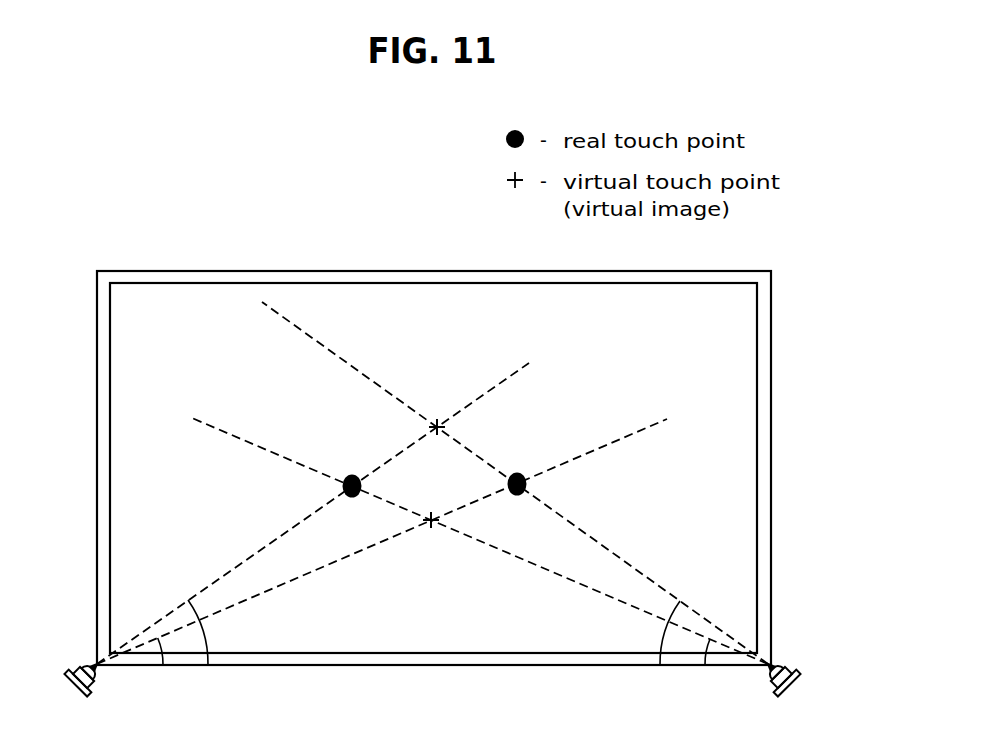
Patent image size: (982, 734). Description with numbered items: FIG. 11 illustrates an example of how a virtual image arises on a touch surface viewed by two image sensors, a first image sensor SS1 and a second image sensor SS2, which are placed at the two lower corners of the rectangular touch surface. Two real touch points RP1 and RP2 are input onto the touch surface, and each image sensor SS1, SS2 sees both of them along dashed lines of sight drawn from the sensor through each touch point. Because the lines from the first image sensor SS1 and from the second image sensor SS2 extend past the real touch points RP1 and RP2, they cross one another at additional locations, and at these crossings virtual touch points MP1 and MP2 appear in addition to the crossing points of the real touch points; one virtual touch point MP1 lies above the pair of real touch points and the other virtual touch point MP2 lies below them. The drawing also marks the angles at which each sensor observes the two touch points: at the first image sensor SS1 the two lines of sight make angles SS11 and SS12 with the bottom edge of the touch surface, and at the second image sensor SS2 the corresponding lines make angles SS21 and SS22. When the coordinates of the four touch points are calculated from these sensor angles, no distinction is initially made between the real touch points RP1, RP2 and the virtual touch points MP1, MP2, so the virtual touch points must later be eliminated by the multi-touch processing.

The first image sensor SS1 is at (72, 680).
The second image sensor SS2 is at (796, 680).
The first real touch point RP1 is at (351, 475).
The second real touch point RP2 is at (518, 474).
The first virtual touch point MP1 is at (437, 415).
The second virtual touch point MP2 is at (431, 508).
The first angle of first sensor SS11 is at (160, 666).
The second angle of first sensor SS12 is at (230, 632).
The first angle of second sensor SS21 is at (705, 666).
The second angle of second sensor SS22 is at (638, 633).